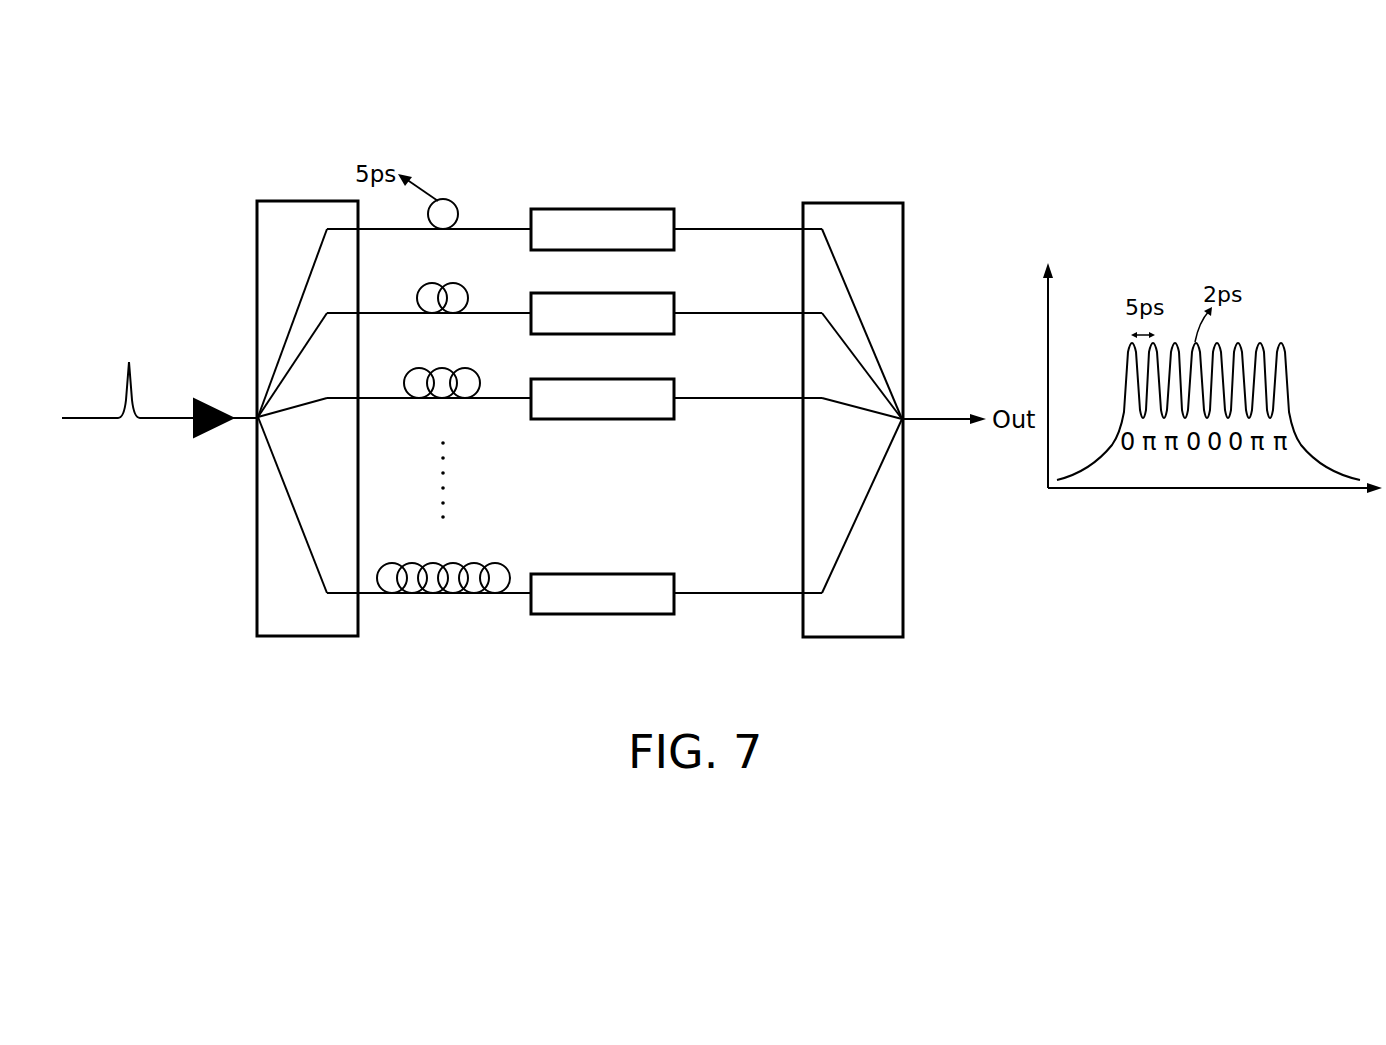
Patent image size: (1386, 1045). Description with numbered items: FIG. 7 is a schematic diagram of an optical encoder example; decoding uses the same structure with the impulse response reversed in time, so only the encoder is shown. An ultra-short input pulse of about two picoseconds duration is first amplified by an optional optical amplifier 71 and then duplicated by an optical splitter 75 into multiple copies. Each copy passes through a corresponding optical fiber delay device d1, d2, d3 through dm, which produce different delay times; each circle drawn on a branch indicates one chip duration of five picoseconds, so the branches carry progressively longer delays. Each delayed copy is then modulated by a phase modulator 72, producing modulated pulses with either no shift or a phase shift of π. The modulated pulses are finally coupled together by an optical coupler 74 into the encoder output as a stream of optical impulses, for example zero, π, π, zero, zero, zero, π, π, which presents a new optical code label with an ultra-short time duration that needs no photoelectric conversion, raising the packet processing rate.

The optical amplifier 71 is at (218, 405).
The phase modulator 72 is at (632, 209).
The optical coupler 74 is at (855, 637).
The optical splitter 75 is at (308, 636).
The optical fiber delay device d1 is at (458, 211).
The optical fiber delay device d2 is at (468, 295).
The optical fiber delay device d3 is at (480, 380).
The optical fiber delay device dm is at (510, 565).